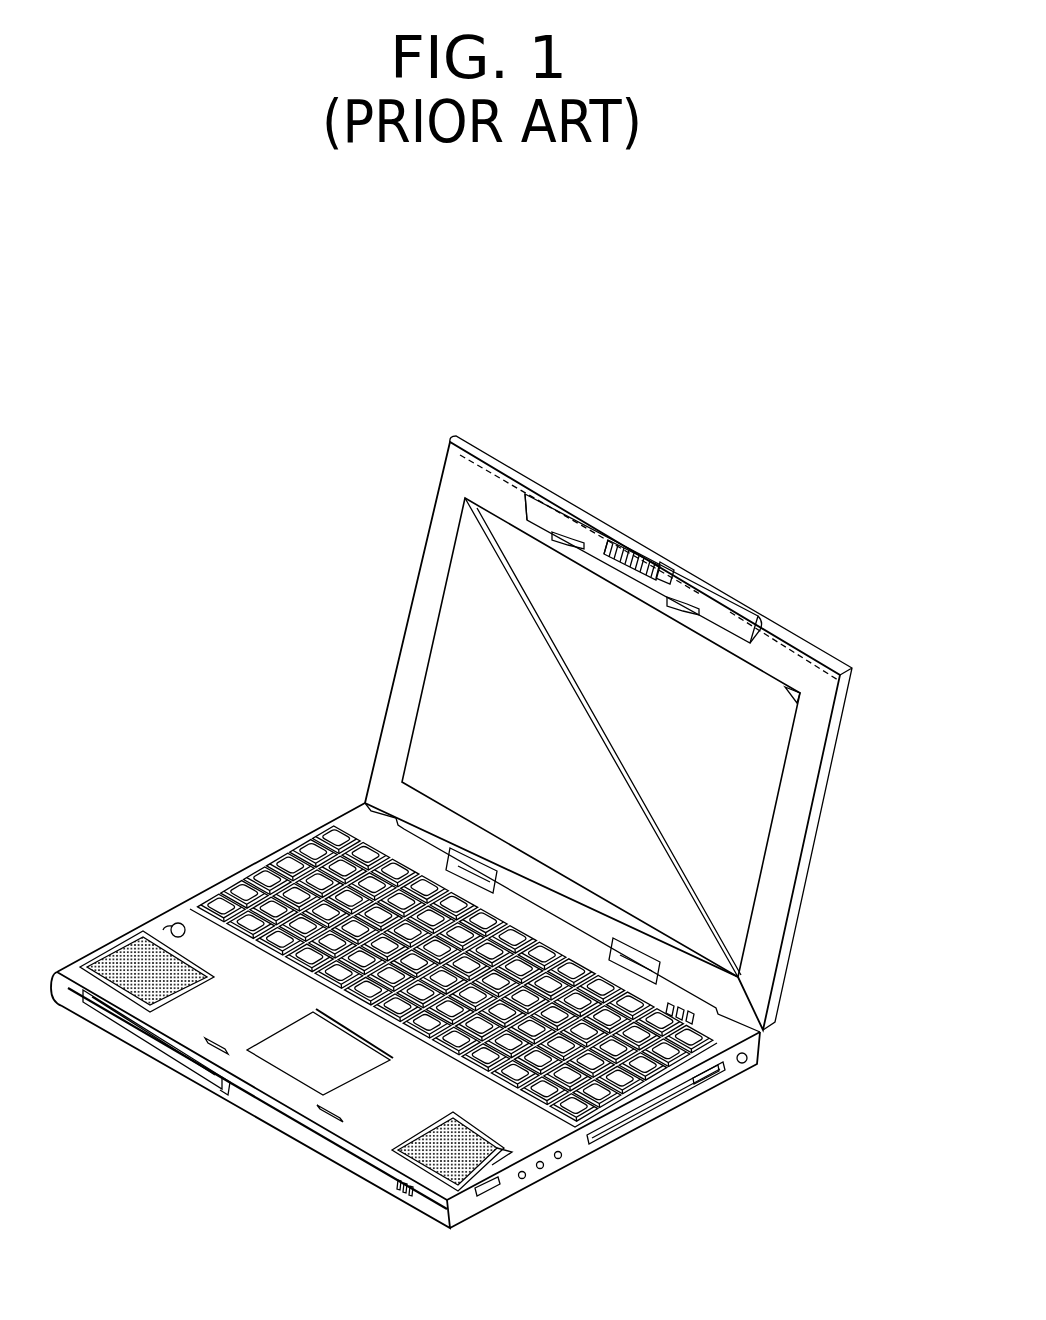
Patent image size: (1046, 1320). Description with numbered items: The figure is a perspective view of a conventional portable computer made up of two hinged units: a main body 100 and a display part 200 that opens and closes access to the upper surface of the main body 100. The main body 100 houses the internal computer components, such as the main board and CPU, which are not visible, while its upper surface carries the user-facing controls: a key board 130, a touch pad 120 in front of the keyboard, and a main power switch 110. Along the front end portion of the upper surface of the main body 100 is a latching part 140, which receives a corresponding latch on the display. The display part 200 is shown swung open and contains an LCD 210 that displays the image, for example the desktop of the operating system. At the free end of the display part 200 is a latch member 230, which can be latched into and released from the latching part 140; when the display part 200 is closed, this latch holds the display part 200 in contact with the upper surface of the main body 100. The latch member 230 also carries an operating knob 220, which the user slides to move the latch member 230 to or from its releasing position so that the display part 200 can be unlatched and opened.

The main body 100 is at (588, 1157).
The main power switch 110 is at (150, 910).
The touch pad 120 is at (288, 1065).
The key board 130 is at (667, 1117).
The latching part 140 is at (180, 1072).
The display part 200 is at (820, 647).
The LCD 210 is at (748, 863).
The operating knob 220 is at (640, 547).
The latch member 230 is at (577, 520).